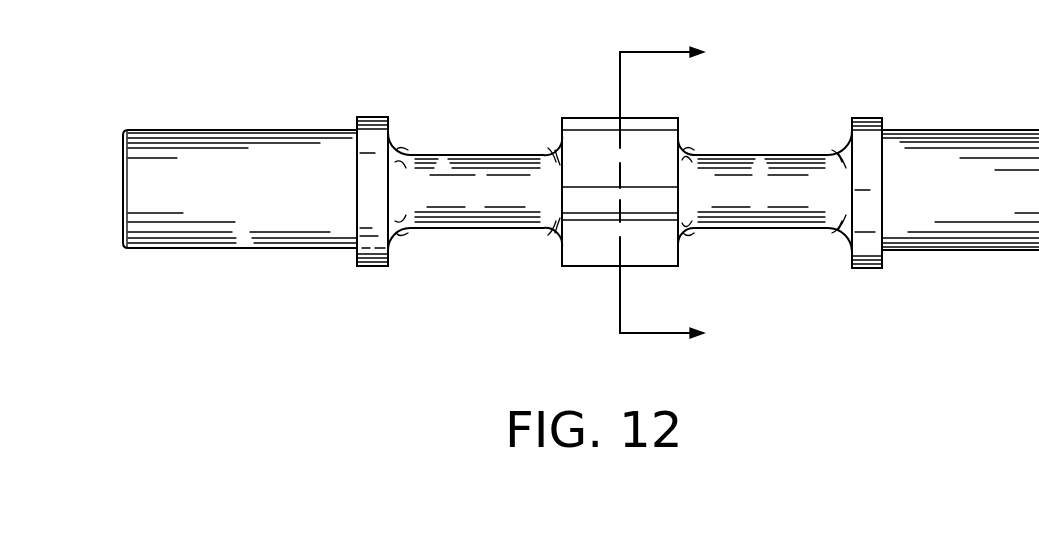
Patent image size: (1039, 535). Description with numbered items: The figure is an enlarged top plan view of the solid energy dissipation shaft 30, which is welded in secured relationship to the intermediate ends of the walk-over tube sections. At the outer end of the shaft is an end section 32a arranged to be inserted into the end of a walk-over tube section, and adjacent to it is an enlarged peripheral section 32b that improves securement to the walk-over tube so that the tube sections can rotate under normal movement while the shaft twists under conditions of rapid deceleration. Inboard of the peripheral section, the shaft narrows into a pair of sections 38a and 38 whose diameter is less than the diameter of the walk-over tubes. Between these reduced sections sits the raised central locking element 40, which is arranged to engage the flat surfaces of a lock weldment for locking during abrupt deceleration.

The energy dissipation shaft 30 is at (946, 118).
The end section 32a is at (243, 223).
The enlarged peripheral section 32b is at (373, 258).
The reduced diameter section 38a is at (440, 165).
The reduced diameter section 38 is at (760, 165).
The raised central locking element 40 is at (657, 145).